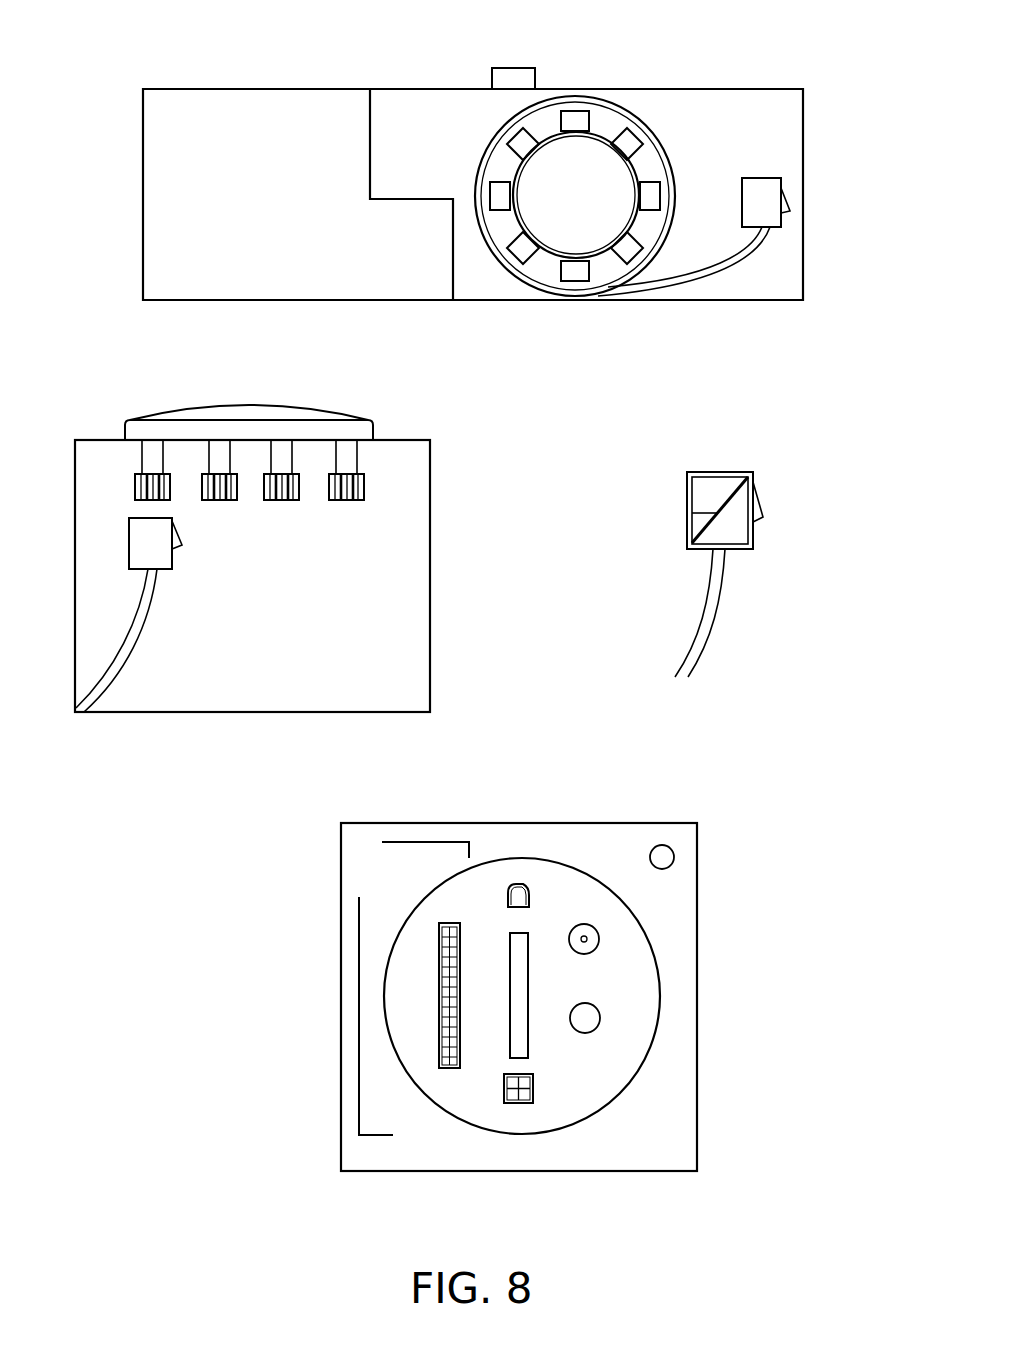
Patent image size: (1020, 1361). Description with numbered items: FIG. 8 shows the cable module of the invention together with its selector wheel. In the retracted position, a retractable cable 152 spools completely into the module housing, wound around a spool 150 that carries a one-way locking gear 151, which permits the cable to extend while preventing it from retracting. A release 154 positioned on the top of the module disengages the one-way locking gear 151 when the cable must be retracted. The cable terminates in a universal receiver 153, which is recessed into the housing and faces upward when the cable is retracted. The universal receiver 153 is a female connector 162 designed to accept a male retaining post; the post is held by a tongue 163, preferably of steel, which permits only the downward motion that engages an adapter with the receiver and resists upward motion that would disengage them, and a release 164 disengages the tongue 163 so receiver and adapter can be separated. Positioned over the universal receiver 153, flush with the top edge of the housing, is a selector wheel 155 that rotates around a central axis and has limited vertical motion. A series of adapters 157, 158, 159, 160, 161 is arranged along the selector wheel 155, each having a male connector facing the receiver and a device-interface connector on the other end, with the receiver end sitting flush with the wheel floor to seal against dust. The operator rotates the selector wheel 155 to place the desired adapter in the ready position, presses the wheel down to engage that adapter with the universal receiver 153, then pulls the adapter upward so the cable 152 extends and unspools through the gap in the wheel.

The spool 150 is at (487, 150).
The one-way locking gear 151 is at (597, 135).
The retractable cable 152 is at (736, 268).
The universal receiver 153 is at (762, 178).
The release 154 is at (518, 68).
The selector wheel 155 is at (342, 1147).
The adapter 157 is at (135, 482).
The adapter 158 is at (237, 500).
The adapter 159 is at (299, 490).
The adapter 160 is at (365, 485).
The adapter 161 is at (439, 992).
The female connector 162 is at (725, 520).
The tongue 163 is at (727, 500).
The release 164 is at (762, 502).